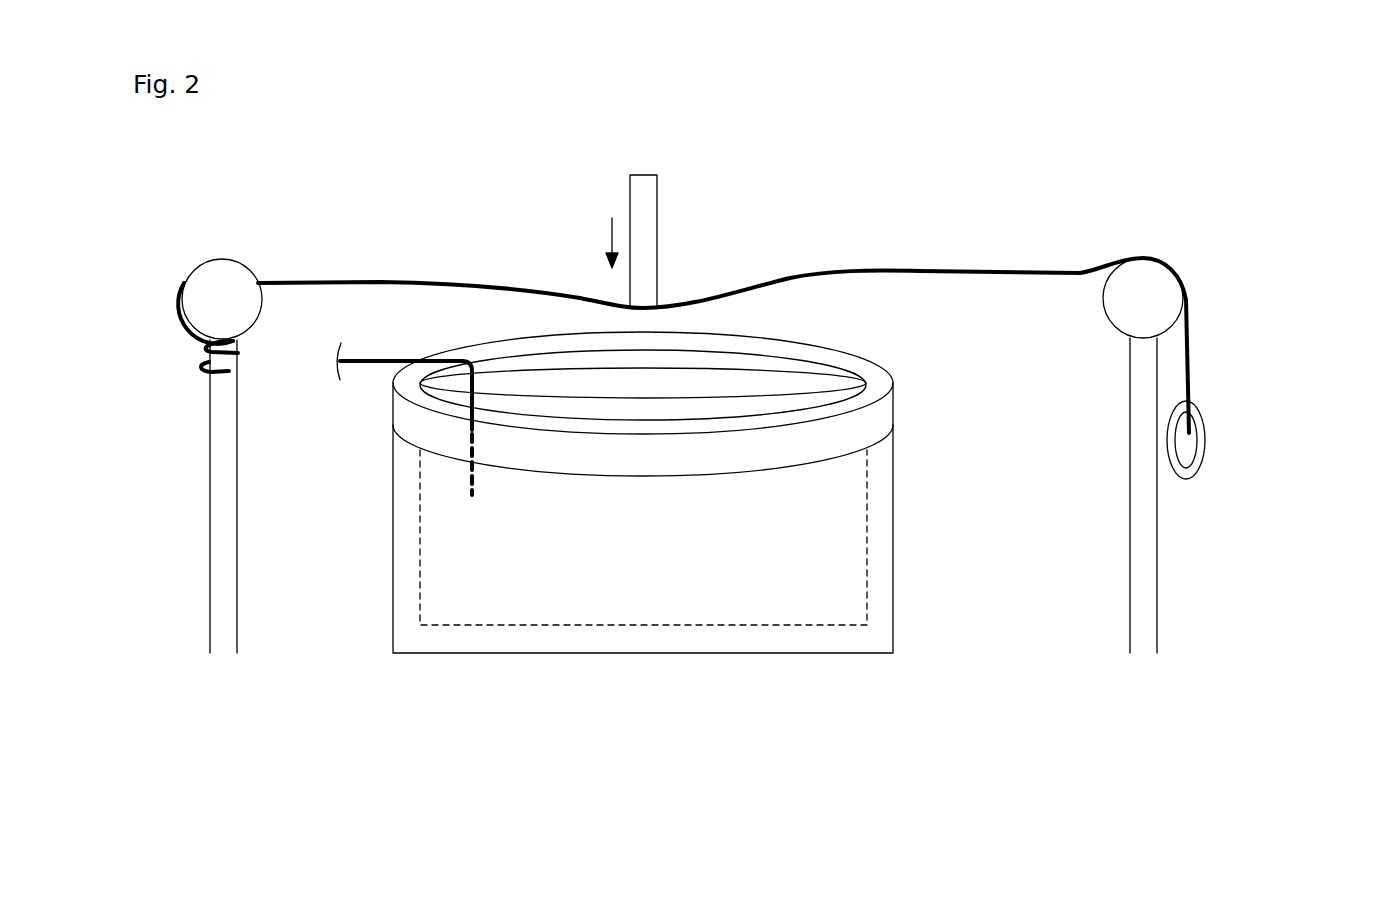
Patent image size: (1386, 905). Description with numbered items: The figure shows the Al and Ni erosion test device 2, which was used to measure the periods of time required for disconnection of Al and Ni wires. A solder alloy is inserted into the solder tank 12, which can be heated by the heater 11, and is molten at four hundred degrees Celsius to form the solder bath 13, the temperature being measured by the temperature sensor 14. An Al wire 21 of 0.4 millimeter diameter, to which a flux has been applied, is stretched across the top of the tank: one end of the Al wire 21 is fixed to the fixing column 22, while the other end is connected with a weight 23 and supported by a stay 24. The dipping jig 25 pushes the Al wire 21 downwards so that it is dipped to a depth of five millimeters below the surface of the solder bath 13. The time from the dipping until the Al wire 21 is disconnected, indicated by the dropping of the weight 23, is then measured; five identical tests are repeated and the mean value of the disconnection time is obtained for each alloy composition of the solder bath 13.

The Al and Ni erosion test device 2 is at (1104, 150).
The heater 11 is at (884, 503).
The solder tank 12 is at (893, 413).
The solder bath 13 is at (447, 545).
The temperature sensor 14 is at (342, 366).
The Al wire 21 is at (925, 269).
The fixing column 22 is at (209, 498).
The weight 23 is at (1205, 443).
The stay 24 is at (1158, 530).
The dipping jig 25 is at (658, 203).